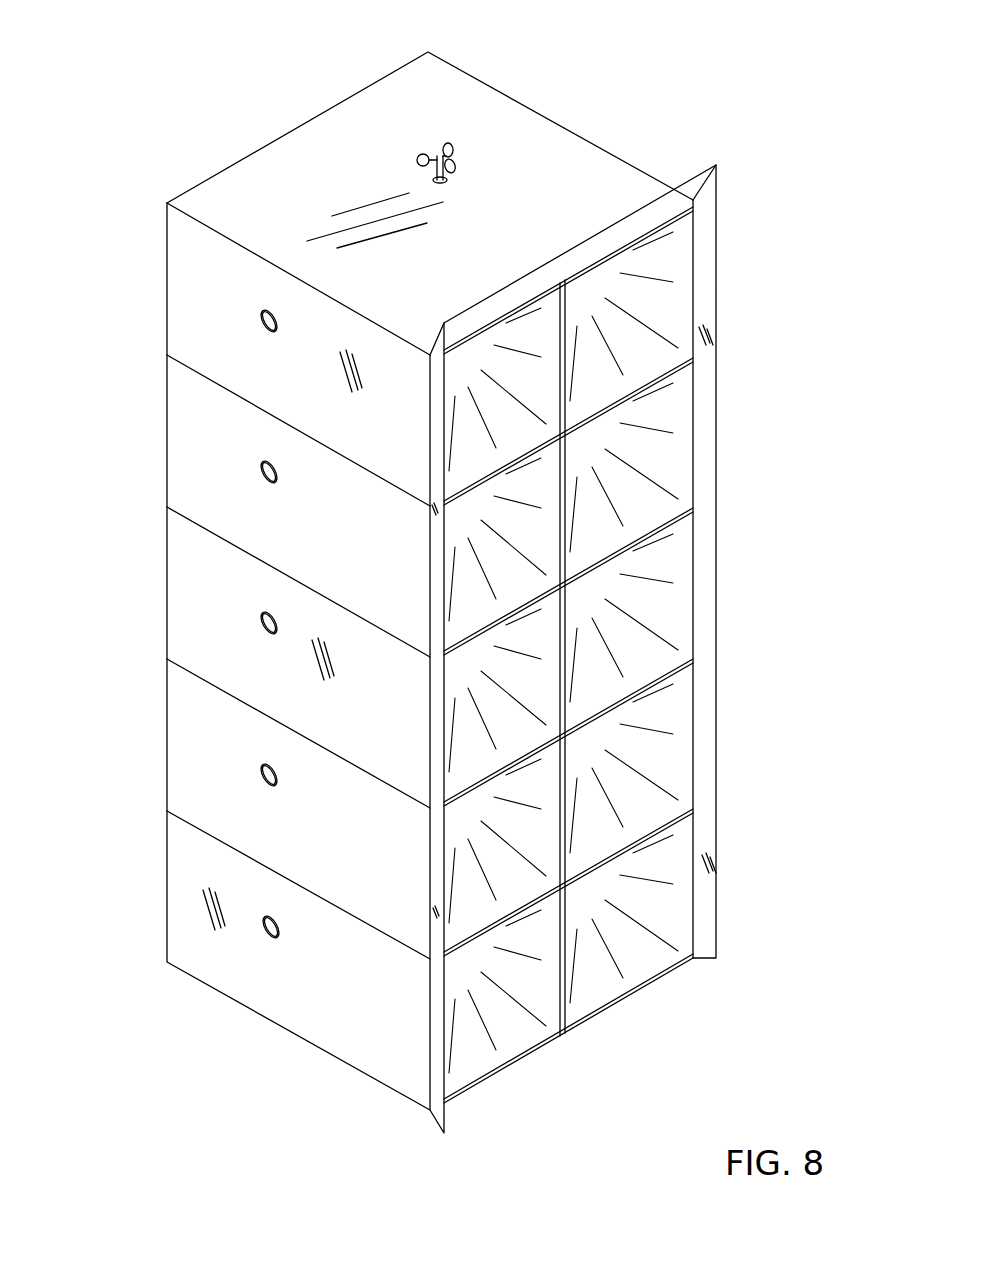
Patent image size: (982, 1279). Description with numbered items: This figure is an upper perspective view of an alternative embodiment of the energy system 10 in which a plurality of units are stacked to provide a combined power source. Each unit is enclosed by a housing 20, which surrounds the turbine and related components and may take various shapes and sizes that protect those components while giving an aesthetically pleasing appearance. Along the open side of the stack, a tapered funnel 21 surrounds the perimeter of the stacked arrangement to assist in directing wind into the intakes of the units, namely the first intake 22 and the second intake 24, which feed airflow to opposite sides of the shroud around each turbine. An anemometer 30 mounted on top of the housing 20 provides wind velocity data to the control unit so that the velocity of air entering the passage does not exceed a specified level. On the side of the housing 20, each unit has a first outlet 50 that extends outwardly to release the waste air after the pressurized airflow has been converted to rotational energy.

The energy system 10 is at (752, 74).
The housing 20 is at (252, 140).
The tapered funnel 21 is at (633, 212).
The first intake 22 is at (650, 358).
The second intake 24 is at (455, 455).
The anemometer 30 is at (466, 143).
The first outlet 50 is at (260, 316).